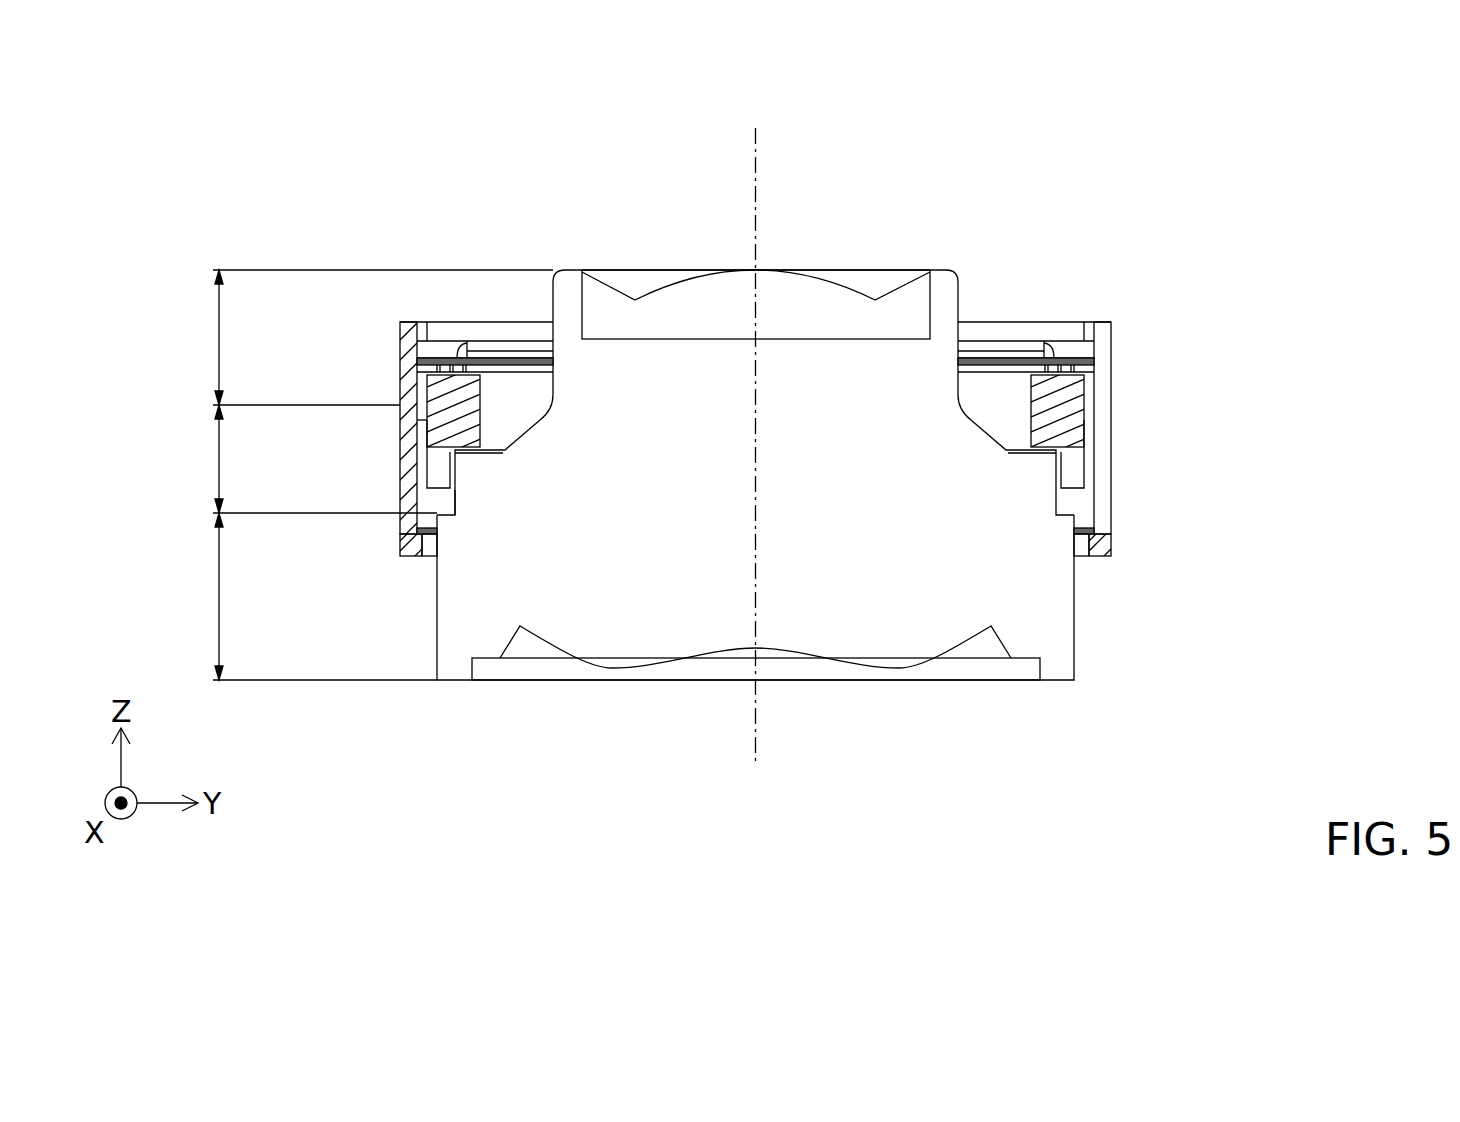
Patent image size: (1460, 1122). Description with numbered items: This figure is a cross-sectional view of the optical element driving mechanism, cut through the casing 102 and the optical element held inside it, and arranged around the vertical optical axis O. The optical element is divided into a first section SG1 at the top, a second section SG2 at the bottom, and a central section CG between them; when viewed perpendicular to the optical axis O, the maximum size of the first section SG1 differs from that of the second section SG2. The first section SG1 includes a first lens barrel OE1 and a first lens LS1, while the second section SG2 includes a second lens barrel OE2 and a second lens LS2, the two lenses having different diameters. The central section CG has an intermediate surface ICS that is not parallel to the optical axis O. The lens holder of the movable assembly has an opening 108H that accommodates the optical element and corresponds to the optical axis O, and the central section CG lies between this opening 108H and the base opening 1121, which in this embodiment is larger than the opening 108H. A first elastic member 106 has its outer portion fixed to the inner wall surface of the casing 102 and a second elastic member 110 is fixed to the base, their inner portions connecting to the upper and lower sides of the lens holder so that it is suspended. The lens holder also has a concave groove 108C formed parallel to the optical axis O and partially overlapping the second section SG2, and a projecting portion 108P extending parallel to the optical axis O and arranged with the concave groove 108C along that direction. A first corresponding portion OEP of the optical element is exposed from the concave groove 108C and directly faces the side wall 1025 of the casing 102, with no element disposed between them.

The optical axis O is at (756, 429).
The first lens LS1 is at (697, 305).
The second lens LS2 is at (535, 668).
The first lens barrel OE1 is at (940, 305).
The second lens barrel OE2 is at (1057, 630).
The casing 102 is at (1103, 375).
The side wall 1025 is at (453, 335).
The first elastic member 106 is at (993, 360).
The projecting portion 108P is at (1068, 372).
The opening 108H is at (1055, 413).
The concave groove 108C is at (1076, 487).
The second elastic member 110 is at (1097, 520).
The base opening 1121 is at (1083, 547).
The intermediate surface ICS is at (442, 428).
The first corresponding portion OEP is at (470, 497).
The first section SG1 is at (355, 337).
The central section CG is at (304, 459).
The second section SG2 is at (297, 596).